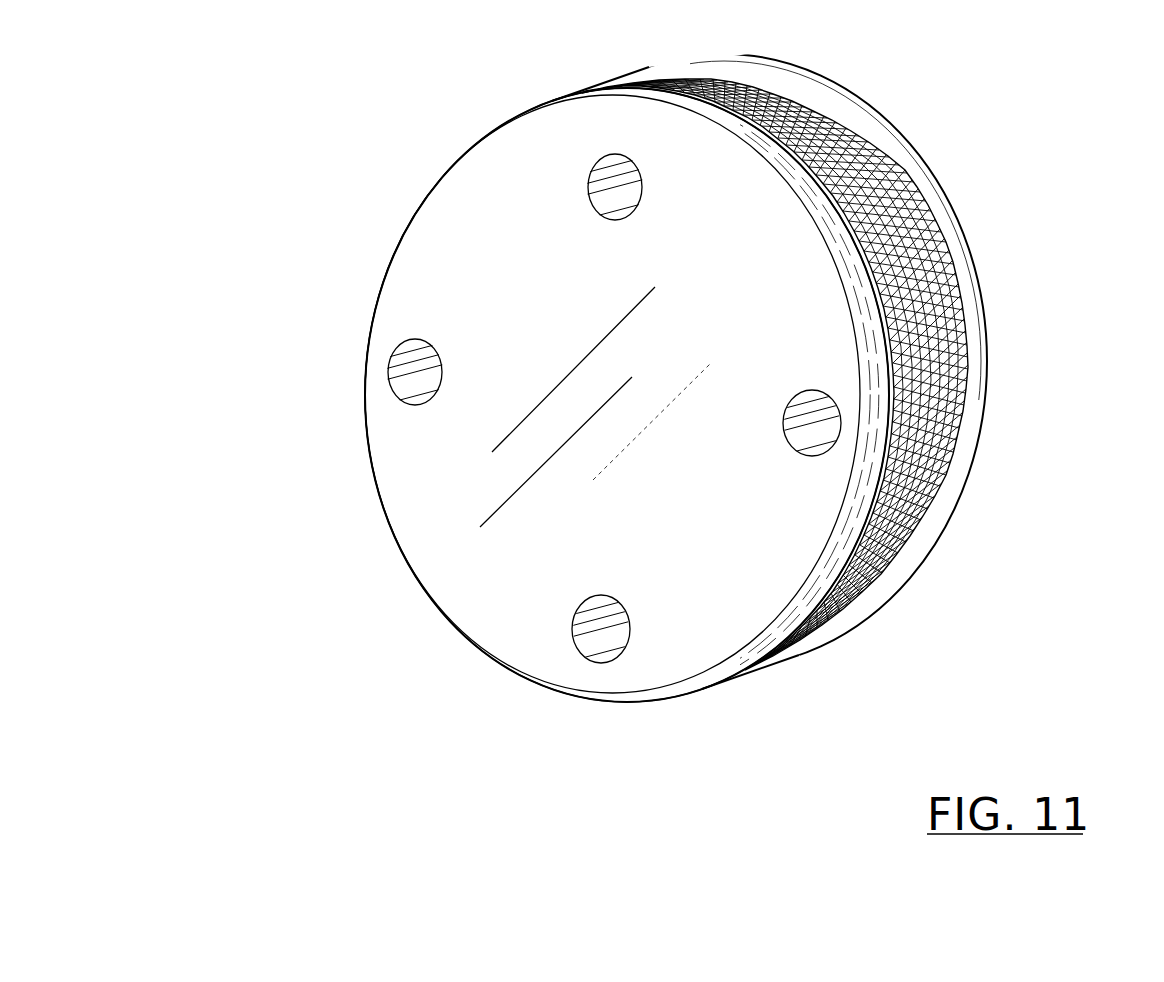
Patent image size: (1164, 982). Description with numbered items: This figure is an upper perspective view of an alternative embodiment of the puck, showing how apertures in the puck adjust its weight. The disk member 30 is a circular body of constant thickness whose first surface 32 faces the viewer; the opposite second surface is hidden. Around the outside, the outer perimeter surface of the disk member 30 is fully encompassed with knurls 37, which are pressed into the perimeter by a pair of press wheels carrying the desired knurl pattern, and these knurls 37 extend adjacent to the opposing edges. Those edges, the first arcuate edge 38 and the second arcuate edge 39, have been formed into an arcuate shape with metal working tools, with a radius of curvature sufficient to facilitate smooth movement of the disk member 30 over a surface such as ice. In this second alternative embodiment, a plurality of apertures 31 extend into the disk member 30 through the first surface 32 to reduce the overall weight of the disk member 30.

The disk member 30 is at (356, 464).
The apertures 31 is at (598, 637).
The first surface 32 is at (478, 507).
The knurls 37 is at (958, 332).
The first arcuate edge 38 is at (578, 110).
The second arcuate edge 39 is at (933, 170).